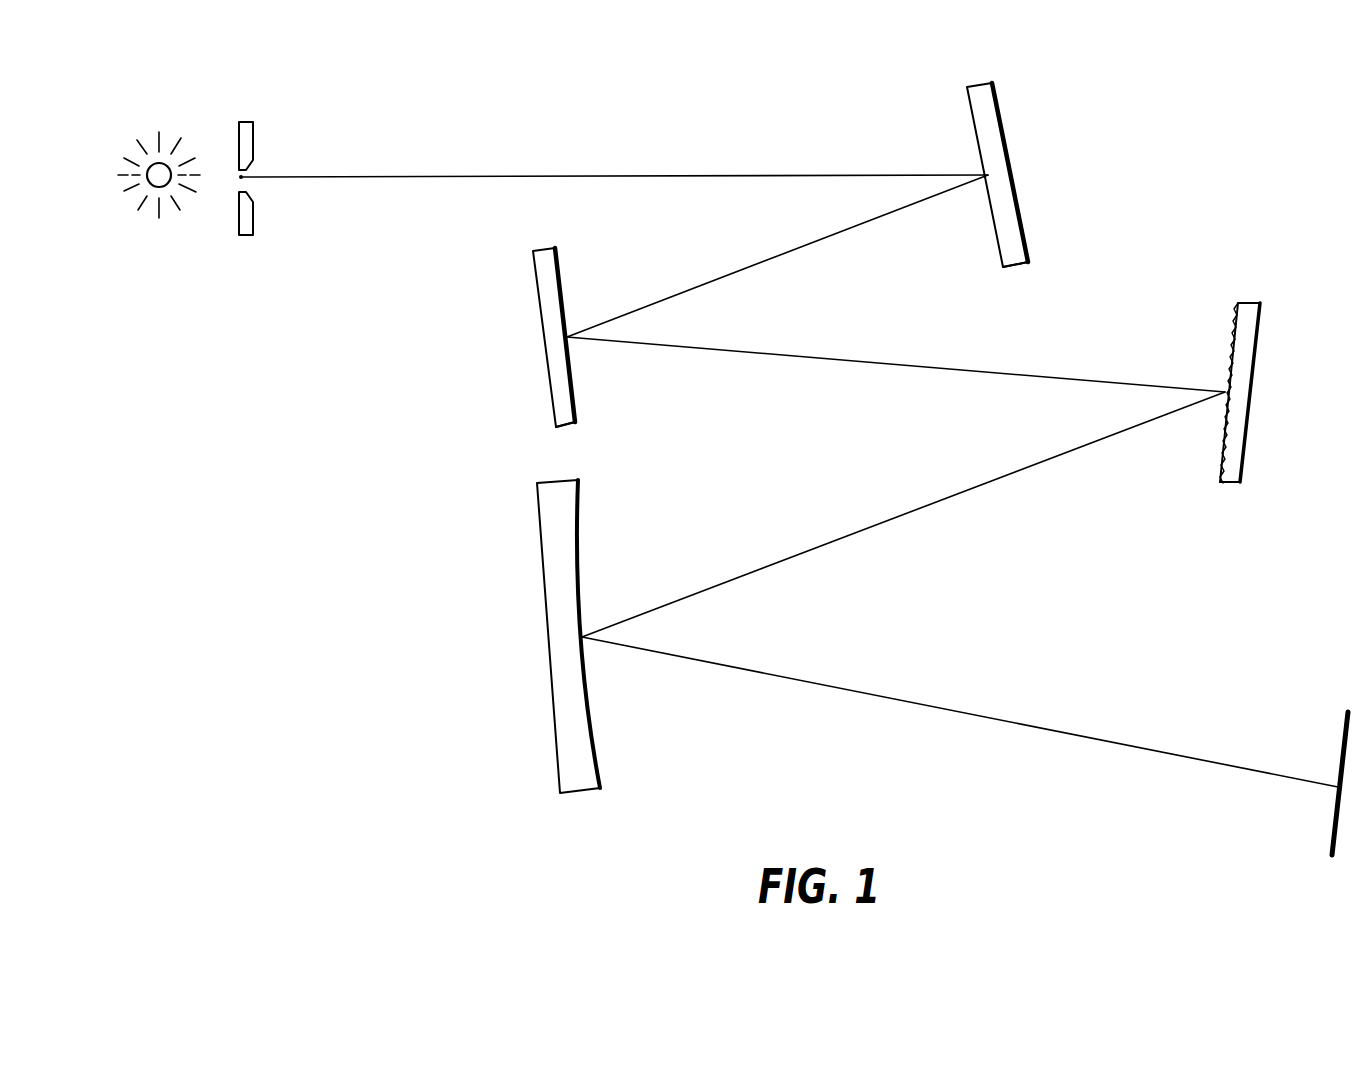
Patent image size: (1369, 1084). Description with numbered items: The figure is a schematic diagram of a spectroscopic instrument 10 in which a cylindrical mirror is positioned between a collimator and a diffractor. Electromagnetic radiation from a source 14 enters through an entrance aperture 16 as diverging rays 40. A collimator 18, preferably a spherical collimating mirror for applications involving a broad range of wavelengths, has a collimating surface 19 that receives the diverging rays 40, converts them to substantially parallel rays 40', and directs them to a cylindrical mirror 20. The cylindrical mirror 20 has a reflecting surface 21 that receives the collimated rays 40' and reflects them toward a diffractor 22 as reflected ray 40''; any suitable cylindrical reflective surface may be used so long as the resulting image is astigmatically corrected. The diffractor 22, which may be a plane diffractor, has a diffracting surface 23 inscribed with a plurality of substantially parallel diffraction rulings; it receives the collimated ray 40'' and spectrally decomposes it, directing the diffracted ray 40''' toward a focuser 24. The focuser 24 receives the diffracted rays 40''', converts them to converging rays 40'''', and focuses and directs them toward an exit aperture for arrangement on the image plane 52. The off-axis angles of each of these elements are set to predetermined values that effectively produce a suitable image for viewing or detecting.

The spectroscopic instrument 10 is at (1106, 143).
The source 14 is at (160, 163).
The entrance aperture 16 is at (253, 169).
The collimator 18 is at (1017, 205).
The collimating surface 19 is at (998, 243).
The cylindrical mirror 20 is at (543, 330).
The reflecting surface 21 is at (573, 400).
The diffractor 22 is at (1250, 385).
The diffracting surface 23 is at (1220, 446).
The focuser 24 is at (548, 687).
The diverging rays 40 is at (614, 144).
The parallel rays 40' is at (777, 256).
The reflected ray 40'' is at (896, 348).
The diffracted ray 40''' is at (903, 514).
The converging rays 40'''' is at (960, 712).
The image plane 52 is at (1333, 830).